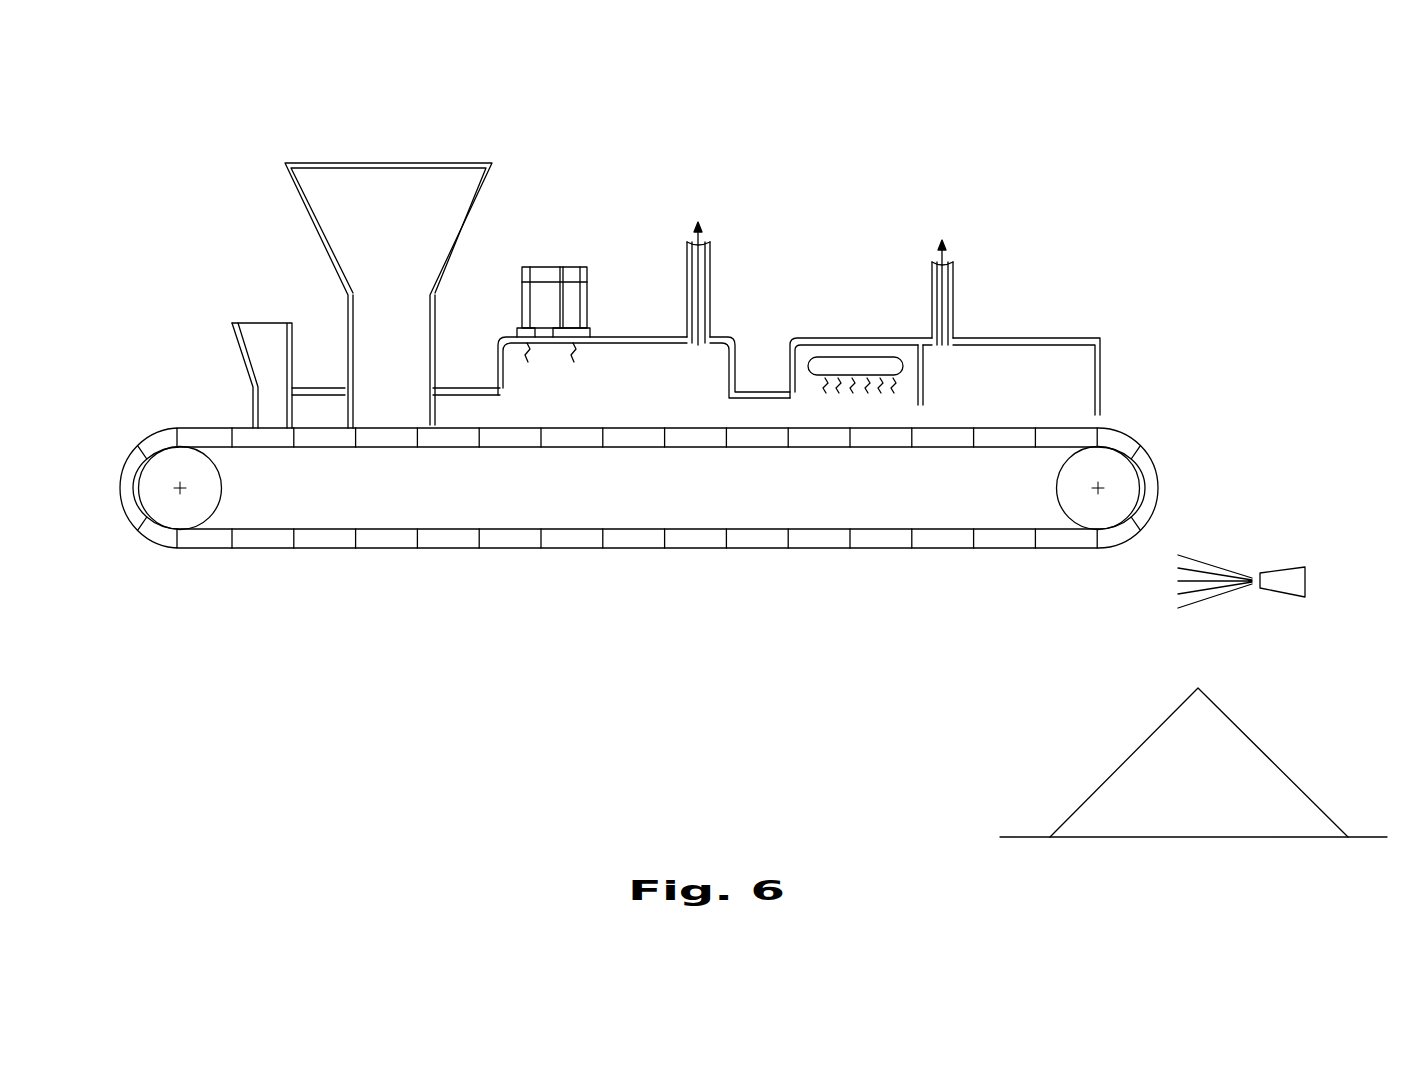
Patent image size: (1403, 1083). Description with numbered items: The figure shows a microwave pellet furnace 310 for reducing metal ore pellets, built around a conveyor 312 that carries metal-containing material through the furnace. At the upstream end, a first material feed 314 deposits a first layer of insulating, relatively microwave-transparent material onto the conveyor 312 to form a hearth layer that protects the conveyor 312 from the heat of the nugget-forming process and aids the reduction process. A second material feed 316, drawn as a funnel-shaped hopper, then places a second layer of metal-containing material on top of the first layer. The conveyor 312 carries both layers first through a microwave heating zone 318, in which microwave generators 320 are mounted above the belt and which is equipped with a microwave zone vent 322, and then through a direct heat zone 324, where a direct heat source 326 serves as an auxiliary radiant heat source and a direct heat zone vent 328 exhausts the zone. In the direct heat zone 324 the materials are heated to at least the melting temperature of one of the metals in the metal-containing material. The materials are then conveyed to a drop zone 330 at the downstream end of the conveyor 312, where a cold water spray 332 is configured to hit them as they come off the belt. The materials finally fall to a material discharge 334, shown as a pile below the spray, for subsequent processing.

The microwave pellet furnace 310 is at (228, 128).
The conveyor 312 is at (203, 548).
The first material feed 314 is at (238, 350).
The second material feed 316 is at (414, 224).
The microwave heating zone 318 is at (657, 383).
The microwave generators 320 is at (578, 265).
The microwave zone vent 322 is at (710, 274).
The direct heat zone 324 is at (837, 420).
The direct heat source 326 is at (852, 360).
The direct heat zone vent 328 is at (953, 291).
The drop zone 330 is at (1180, 432).
The cold water spray 332 is at (1285, 567).
The material discharge 334 is at (1224, 773).